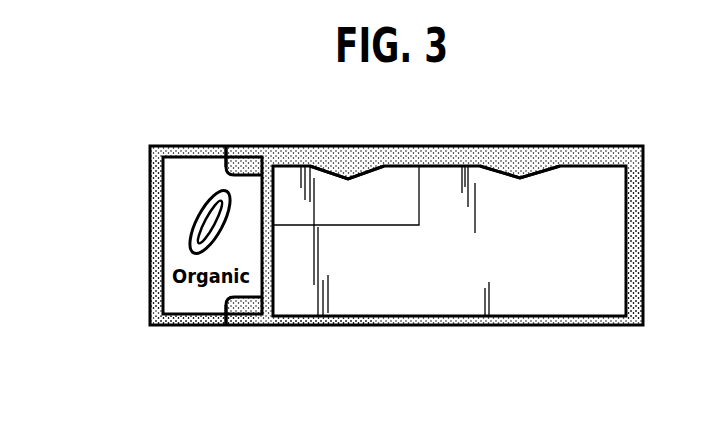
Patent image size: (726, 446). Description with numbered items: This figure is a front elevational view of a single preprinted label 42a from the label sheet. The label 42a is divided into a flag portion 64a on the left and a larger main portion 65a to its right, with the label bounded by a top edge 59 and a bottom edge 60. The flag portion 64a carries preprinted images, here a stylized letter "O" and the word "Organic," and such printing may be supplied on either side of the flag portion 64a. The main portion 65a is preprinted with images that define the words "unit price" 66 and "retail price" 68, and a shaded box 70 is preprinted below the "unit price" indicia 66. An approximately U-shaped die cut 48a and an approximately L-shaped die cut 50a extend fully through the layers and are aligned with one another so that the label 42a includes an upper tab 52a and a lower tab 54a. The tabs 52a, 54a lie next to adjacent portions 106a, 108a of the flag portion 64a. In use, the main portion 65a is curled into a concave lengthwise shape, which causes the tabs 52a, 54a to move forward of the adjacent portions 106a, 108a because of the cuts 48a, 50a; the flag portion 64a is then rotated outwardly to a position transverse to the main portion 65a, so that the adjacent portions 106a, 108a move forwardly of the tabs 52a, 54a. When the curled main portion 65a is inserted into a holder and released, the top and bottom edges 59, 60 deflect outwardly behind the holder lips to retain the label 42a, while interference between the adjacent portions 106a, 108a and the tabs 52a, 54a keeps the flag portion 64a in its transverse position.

The top edge 59 is at (612, 146).
The label 42a is at (598, 288).
The flag portion 64a is at (150, 204).
The die cut 48a is at (228, 328).
The bottom edge 60 is at (322, 323).
The main portion 65a is at (398, 288).
The "unit price" indicia 66 is at (372, 160).
The "retail price" indicia 68 is at (540, 160).
The shaded box 70 is at (402, 193).
The adjacent portion 106a is at (222, 162).
The die cut 50a is at (243, 165).
The upper tab 52a is at (250, 163).
The adjacent portion 108a is at (228, 304).
The lower tab 54a is at (250, 318).